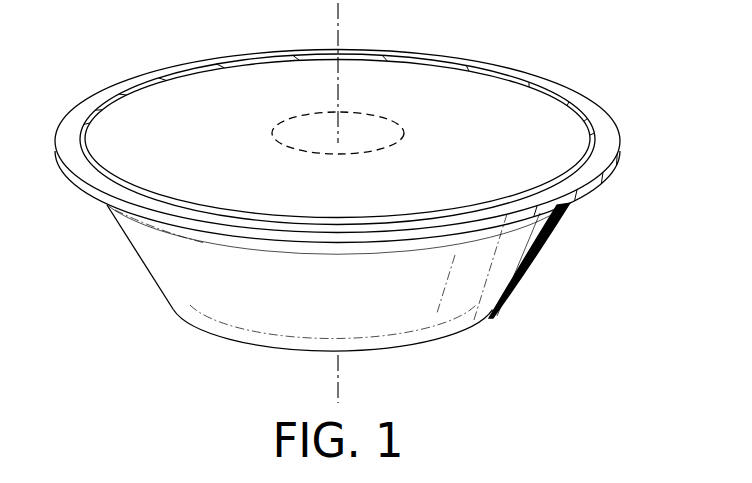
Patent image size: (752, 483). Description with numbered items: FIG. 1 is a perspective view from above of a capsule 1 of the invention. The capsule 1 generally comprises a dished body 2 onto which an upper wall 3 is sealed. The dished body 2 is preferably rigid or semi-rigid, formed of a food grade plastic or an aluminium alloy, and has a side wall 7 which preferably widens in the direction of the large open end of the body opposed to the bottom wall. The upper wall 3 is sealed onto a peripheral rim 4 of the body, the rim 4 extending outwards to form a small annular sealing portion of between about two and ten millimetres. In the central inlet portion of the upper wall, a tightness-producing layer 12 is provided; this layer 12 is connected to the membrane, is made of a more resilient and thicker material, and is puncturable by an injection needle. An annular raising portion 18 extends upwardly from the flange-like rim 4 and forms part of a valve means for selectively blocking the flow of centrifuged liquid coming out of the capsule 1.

The capsule 1 is at (84, 268).
The dished body 2 is at (536, 269).
The upper wall 3 is at (452, 80).
The peripheral rim 4 is at (82, 115).
The side wall 7 is at (165, 275).
The tightness-producing layer 12 is at (299, 117).
The annular raising portion 18 is at (598, 153).